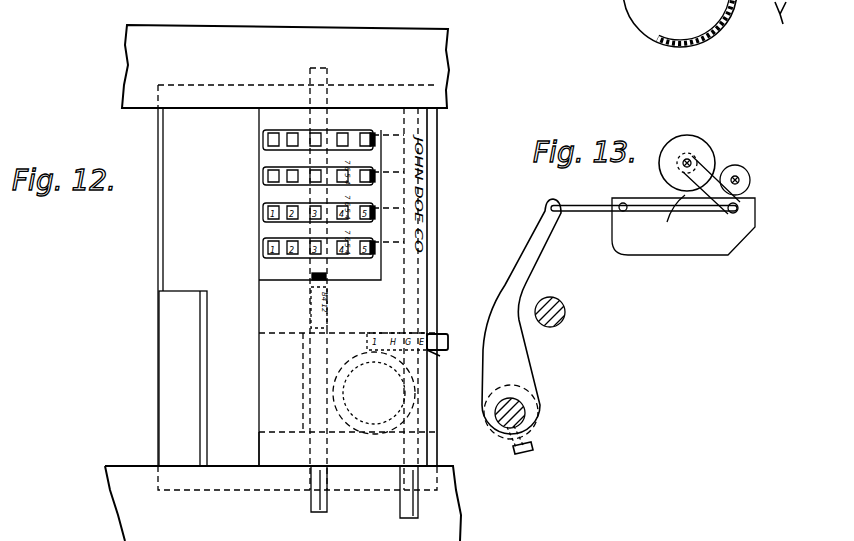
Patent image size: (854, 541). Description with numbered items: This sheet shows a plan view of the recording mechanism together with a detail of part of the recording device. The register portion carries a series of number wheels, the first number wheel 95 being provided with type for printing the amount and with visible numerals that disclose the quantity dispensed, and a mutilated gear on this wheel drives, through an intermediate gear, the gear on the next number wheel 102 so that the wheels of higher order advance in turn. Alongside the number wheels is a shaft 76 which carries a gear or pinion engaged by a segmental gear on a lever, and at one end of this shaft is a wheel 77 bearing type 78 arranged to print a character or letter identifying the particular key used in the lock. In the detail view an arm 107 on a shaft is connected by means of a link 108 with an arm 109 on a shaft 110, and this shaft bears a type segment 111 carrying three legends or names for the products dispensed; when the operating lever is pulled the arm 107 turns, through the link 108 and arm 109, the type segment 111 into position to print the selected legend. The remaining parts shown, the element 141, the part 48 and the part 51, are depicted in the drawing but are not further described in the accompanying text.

In FIG. 12, the first number wheel 95 is at (262, 143).
In FIG. 12, the number wheel 102 is at (267, 180).
In FIG. 12, the type 78 is at (447, 334).
In FIG. 12, the wheel 77 is at (448, 349).
In FIG. 12, the type segment 111 is at (382, 451).
In FIG. 13, the type segment 111 is at (703, 198).
In FIG. 12, the shaft 110 is at (320, 497).
In FIG. 13, the shaft 110 is at (680, 167).
In FIG. 12, the shaft 76 is at (413, 503).
In FIG. 13, the arm 107 is at (535, 243).
In FIG. 13, the link 108 is at (607, 213).
In FIG. 13, the arm 109 is at (710, 183).
In FIG. 13, the wheel 141 is at (776, 9).
In FIG. 13, the pivot pin 48 is at (566, 308).
In FIG. 13, the shaft 51 is at (517, 417).